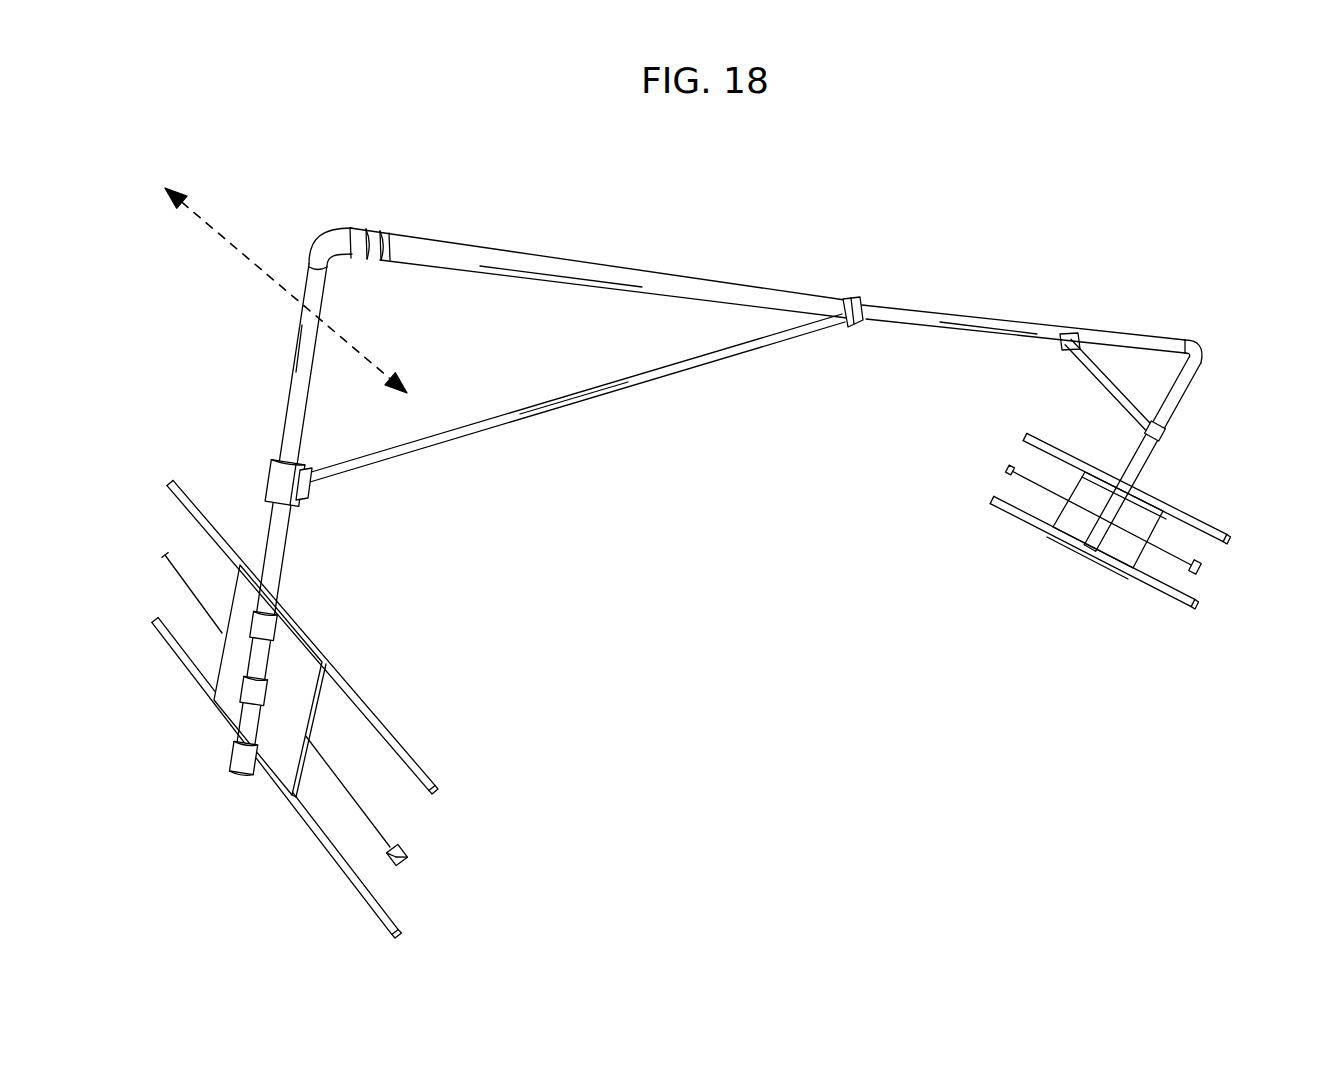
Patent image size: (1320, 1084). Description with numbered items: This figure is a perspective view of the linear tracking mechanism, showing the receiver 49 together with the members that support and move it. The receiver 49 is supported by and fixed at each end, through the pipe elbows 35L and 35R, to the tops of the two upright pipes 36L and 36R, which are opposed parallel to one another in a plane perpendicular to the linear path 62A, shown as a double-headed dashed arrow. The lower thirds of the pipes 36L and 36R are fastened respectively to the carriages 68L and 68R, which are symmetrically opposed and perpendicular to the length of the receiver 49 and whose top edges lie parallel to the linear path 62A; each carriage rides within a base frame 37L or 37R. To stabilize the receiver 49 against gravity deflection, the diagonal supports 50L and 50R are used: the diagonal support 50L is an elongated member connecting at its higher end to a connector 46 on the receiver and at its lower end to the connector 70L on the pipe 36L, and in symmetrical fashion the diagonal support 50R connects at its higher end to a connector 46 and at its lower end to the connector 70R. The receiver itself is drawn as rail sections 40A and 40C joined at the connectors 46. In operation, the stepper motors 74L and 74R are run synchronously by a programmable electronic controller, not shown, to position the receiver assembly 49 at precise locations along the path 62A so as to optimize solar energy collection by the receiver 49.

The pipe elbow 35L is at (317, 248).
The pipe elbow 35R is at (1198, 338).
The pipe 36L is at (293, 402).
The pipe 36R is at (1185, 387).
The left base frame 37L is at (346, 709).
The right base frame 37R is at (1127, 585).
The first top rail section 40A is at (437, 262).
The third top rail section 40C is at (1124, 344).
The connector 46 is at (842, 333).
The receiver 49 is at (767, 295).
The diagonal support 50L is at (468, 427).
The diagonal support 50R is at (1120, 405).
The linear path 62A is at (243, 258).
The carriage 68L is at (278, 755).
The carriage 68R is at (1118, 548).
The connector 70L is at (310, 490).
The connector 70R is at (1163, 432).
The stepper motor 74L is at (410, 855).
The stepper motor 74R is at (1200, 570).